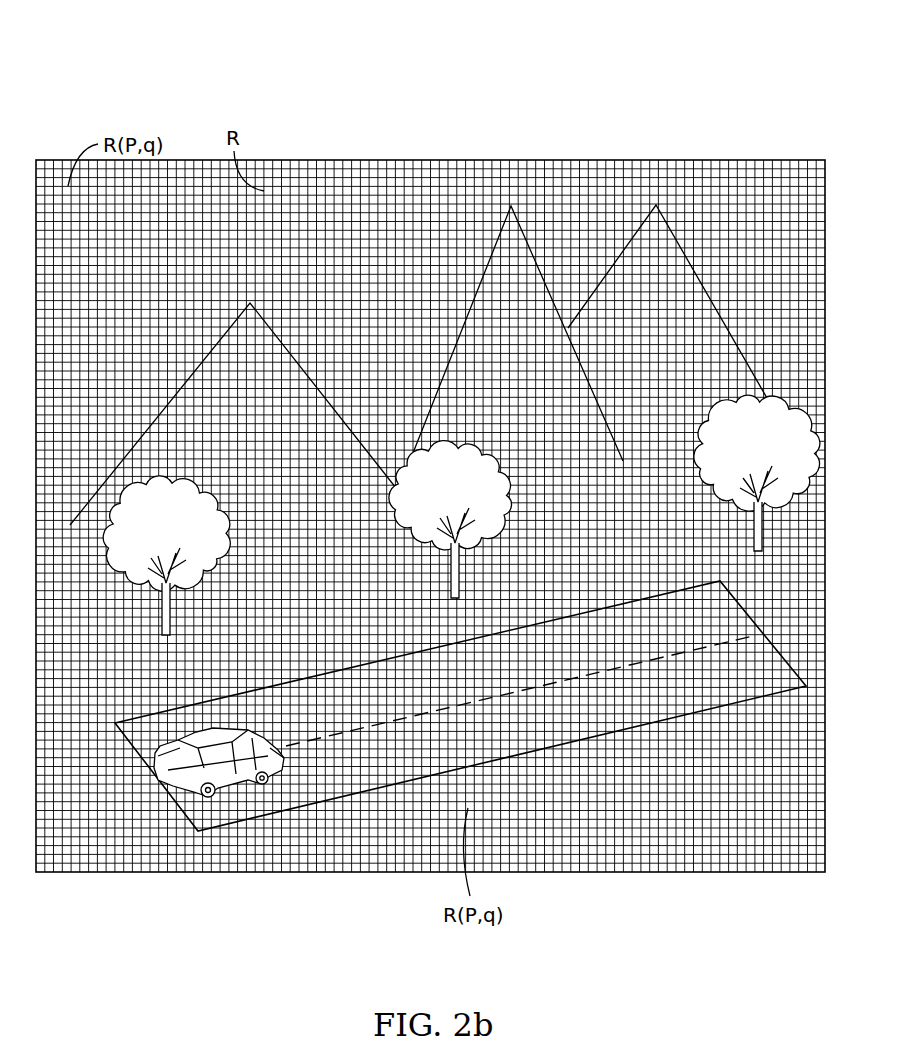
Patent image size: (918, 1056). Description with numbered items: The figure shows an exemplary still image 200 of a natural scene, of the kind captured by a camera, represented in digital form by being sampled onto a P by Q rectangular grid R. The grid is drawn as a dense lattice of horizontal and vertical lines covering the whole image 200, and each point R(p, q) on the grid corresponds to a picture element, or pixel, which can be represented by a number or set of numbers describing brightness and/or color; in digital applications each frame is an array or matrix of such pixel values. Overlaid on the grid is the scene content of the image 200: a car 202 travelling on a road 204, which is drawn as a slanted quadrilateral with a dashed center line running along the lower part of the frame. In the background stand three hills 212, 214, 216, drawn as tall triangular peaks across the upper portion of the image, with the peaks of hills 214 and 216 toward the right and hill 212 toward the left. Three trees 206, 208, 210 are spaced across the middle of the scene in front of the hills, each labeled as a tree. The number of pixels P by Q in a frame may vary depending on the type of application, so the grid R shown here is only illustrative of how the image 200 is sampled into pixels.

The still image 200 is at (120, 68).
The car 202 is at (170, 742).
The road 204 is at (590, 733).
The tree 206 is at (218, 551).
The tree 208 is at (503, 517).
The tree 210 is at (702, 490).
The hill 212 is at (282, 343).
The hill 214 is at (520, 225).
The hill 216 is at (680, 248).